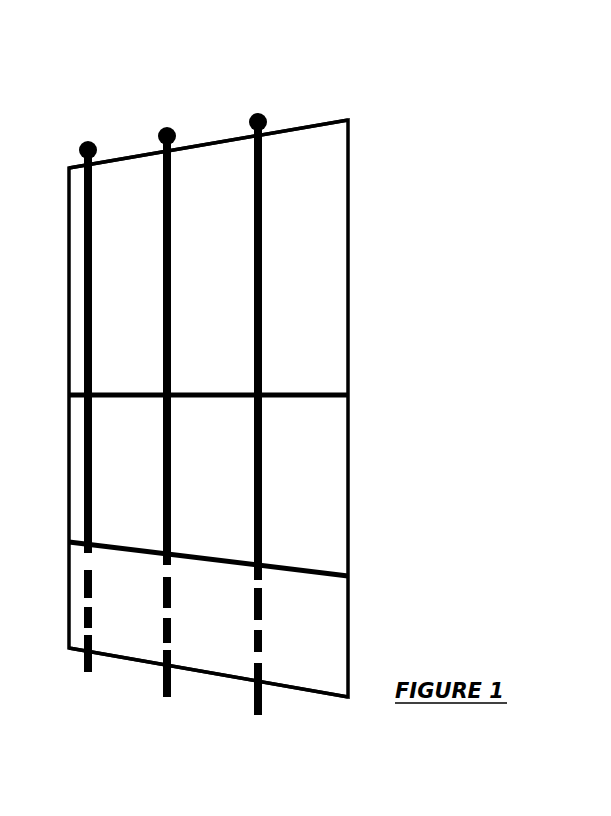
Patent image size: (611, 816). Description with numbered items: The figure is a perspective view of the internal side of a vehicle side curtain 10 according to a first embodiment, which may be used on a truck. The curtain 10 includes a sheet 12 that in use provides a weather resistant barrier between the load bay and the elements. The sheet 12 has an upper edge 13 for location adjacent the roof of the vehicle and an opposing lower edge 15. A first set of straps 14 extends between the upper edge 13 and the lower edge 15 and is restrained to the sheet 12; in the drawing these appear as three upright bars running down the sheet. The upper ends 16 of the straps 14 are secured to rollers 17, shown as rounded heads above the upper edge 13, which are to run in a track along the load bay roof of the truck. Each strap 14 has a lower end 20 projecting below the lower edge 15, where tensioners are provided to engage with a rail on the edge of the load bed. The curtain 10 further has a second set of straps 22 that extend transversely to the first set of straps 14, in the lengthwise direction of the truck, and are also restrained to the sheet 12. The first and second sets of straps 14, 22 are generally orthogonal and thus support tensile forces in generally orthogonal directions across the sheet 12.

The vehicle side curtain 10 is at (253, 425).
The sheet 12 is at (342, 315).
The upper edge 13 is at (337, 117).
The first set of straps 14 is at (90, 608).
The lower edge 15 is at (337, 698).
The upper ends 16 is at (83, 177).
The rollers 17 is at (89, 141).
The lower end 20 is at (85, 675).
The second set of straps 22 is at (335, 392).